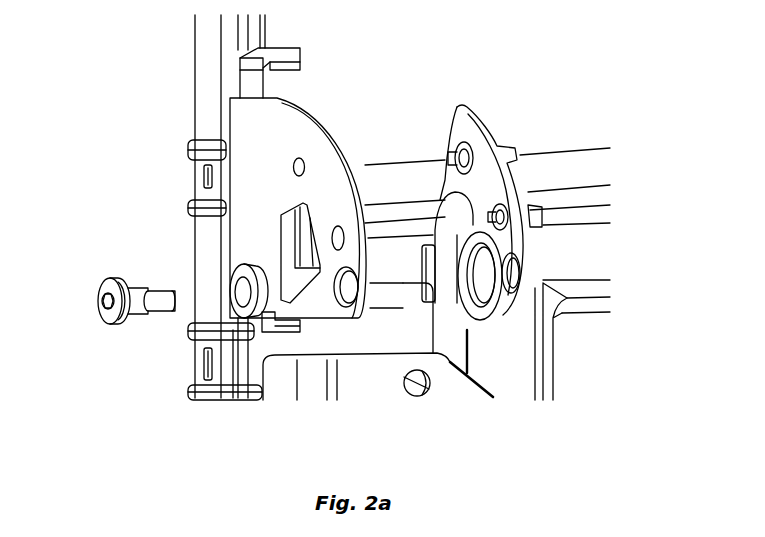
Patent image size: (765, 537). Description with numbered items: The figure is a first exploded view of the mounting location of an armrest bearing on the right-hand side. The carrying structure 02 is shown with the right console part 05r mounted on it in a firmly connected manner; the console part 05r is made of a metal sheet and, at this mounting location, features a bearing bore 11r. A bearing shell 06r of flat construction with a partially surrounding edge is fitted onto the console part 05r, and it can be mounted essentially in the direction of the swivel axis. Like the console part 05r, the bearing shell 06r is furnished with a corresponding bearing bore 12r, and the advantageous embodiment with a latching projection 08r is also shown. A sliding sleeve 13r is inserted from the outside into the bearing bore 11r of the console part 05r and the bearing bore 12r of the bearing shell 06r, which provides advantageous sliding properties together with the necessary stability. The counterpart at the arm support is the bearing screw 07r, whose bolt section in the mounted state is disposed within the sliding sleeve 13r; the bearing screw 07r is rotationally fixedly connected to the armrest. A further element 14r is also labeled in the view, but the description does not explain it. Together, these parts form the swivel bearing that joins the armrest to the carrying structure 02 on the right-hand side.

The carrying structure 02 is at (207, 77).
The console part 05r is at (257, 167).
The sliding sleeve 13r is at (242, 293).
The bearing screw 07r is at (98, 286).
The pin 14r is at (450, 155).
The bearing shell 06r is at (480, 133).
The bearing bore 11r is at (347, 290).
The latching projection 08r is at (465, 253).
The bearing bore 12r is at (460, 283).